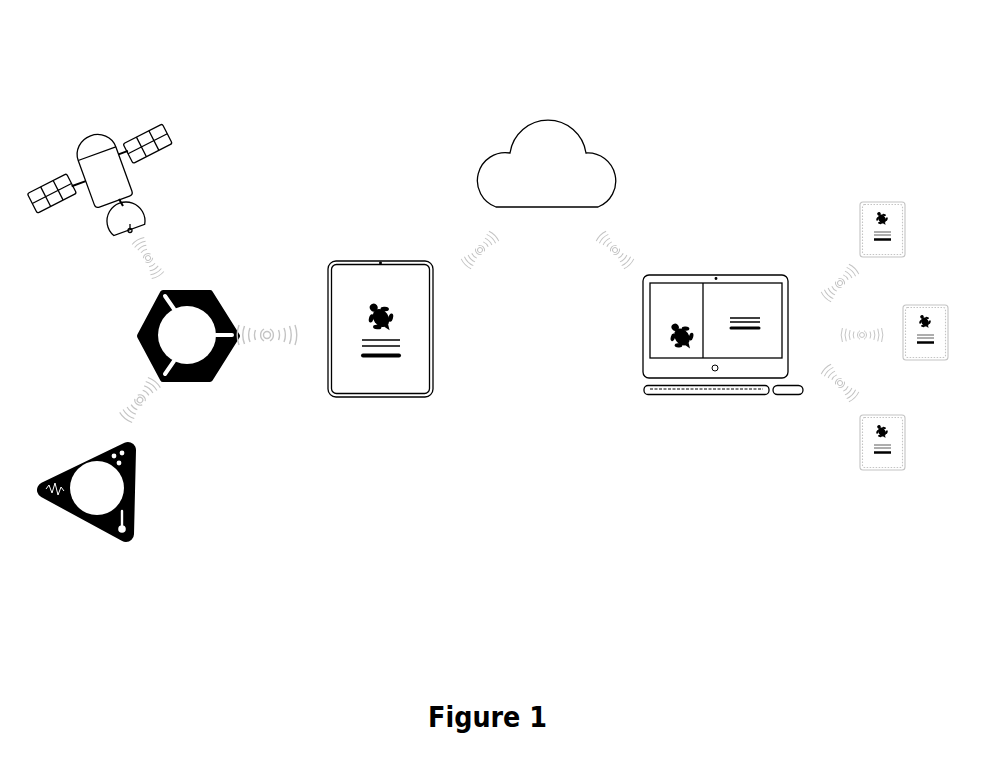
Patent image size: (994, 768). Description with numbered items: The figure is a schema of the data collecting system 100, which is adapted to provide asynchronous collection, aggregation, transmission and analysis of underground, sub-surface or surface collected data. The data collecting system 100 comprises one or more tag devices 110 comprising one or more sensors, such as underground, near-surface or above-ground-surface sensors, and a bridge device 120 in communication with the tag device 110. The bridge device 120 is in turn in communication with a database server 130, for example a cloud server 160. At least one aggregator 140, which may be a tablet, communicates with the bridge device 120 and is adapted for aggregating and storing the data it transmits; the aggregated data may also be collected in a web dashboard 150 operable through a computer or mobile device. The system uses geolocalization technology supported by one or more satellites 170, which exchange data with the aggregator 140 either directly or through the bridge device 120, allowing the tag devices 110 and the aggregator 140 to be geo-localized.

The data collecting system 100 is at (290, 100).
The tag device 110 is at (134, 536).
The bridge device 120 is at (152, 308).
The database server 130 is at (613, 163).
The cloud server 160 is at (590, 152).
The aggregator 140 is at (432, 394).
The web dashboard 150 is at (642, 373).
The satellite 170 is at (90, 135).